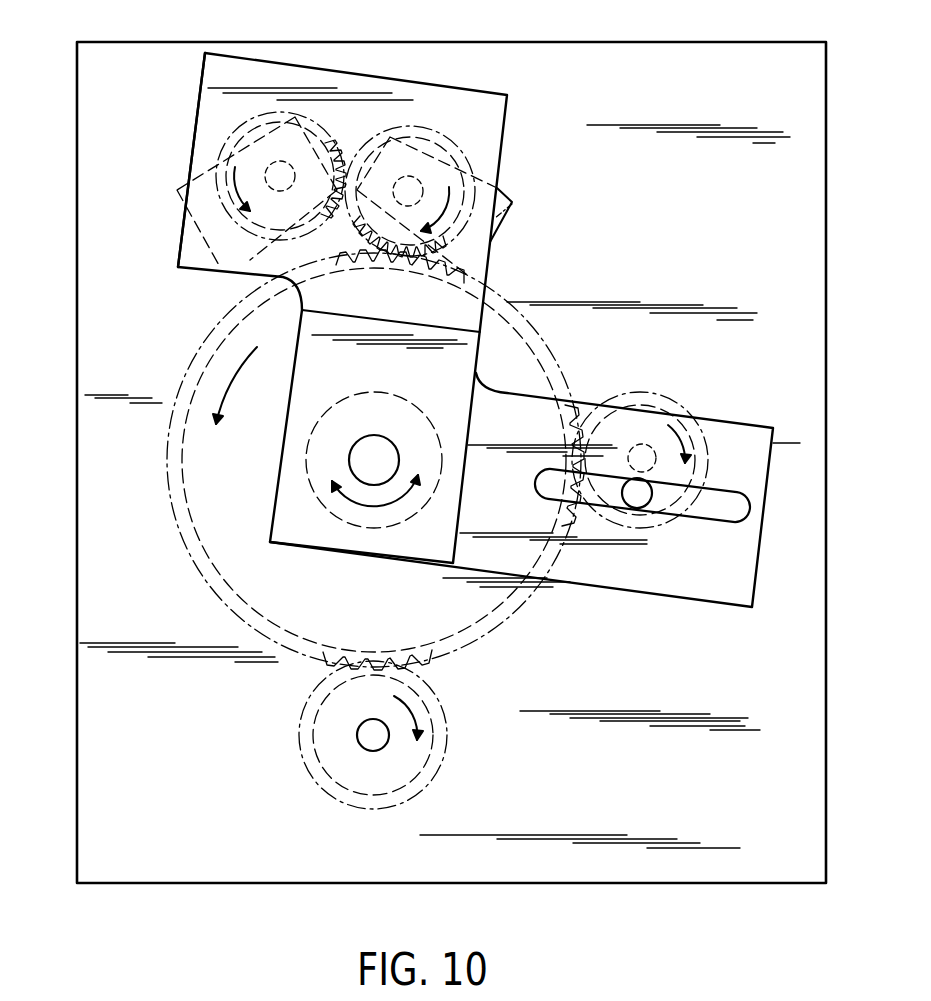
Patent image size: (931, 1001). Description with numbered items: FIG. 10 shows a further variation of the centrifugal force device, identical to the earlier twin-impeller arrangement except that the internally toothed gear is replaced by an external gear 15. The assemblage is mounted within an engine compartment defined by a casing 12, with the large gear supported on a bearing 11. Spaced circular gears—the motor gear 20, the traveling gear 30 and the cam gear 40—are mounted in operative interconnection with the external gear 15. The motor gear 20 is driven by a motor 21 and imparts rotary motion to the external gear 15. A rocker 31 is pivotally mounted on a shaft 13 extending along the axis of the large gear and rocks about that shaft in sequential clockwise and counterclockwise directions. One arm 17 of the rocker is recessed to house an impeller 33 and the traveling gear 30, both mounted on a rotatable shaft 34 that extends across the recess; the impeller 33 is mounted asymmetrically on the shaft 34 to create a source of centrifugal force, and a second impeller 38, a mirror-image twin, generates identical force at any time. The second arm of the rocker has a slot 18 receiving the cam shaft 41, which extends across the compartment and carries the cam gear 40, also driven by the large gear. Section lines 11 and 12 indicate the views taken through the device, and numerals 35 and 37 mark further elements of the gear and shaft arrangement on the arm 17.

The bearing 11 is at (427, 45).
The casing 12 is at (753, 43).
The shaft 13 is at (349, 460).
The external gear 15 is at (192, 528).
The arm 17 is at (488, 274).
The slot 18 is at (647, 593).
The motor gear 20 is at (345, 802).
The motor 21 is at (358, 745).
The traveling gear 30 is at (420, 180).
The rocker 31 is at (571, 505).
The impeller 33 is at (505, 216).
The shaft 34 is at (420, 165).
The gear 35 is at (297, 105).
The shaft 37 is at (279, 160).
The second impeller 38 is at (70, 190).
The cam gear 40 is at (673, 400).
The cam shaft 41 is at (642, 447).